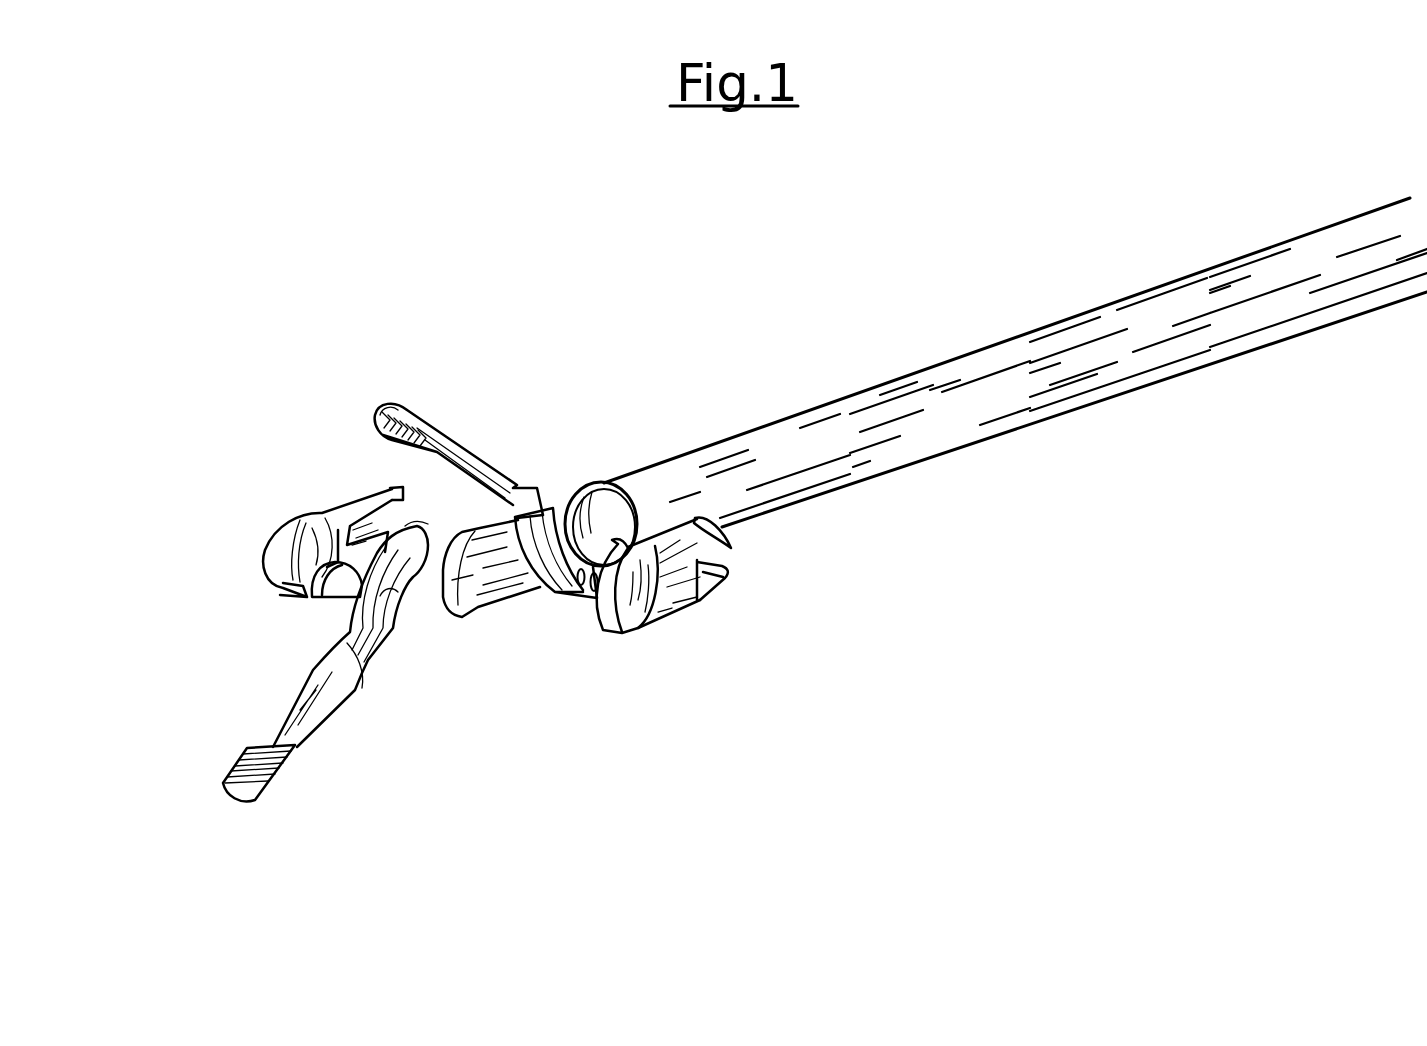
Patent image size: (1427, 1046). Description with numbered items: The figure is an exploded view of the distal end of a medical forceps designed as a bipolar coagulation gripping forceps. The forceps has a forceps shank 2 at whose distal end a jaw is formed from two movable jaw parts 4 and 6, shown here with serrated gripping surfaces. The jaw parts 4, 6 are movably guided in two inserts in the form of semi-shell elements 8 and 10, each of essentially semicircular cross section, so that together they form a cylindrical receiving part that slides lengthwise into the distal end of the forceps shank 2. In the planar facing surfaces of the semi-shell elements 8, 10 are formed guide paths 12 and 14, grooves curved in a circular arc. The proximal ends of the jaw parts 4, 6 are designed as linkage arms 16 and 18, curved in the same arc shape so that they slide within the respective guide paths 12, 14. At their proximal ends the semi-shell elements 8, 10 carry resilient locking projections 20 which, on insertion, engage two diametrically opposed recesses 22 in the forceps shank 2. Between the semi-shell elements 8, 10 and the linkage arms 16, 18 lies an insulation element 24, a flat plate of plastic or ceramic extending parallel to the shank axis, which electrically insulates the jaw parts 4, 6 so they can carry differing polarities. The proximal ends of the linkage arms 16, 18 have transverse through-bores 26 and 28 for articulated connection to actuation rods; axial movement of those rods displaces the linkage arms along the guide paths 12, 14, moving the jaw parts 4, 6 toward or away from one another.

The forceps shank 2 is at (953, 436).
The jaw part 4 is at (477, 453).
The jaw part 6 is at (319, 737).
The semi-shell element 8 is at (678, 603).
The semi-shell element 10 is at (260, 567).
The guide path 12 is at (597, 594).
The guide path 14 is at (298, 590).
The linkage arm 16 is at (548, 580).
The linkage arm 18 is at (388, 598).
The resilient locking projection 20 is at (729, 543).
The recess 22 is at (678, 457).
The insulation element 24 is at (485, 587).
The through-bore 26 is at (577, 594).
The through-bore 28 is at (430, 522).